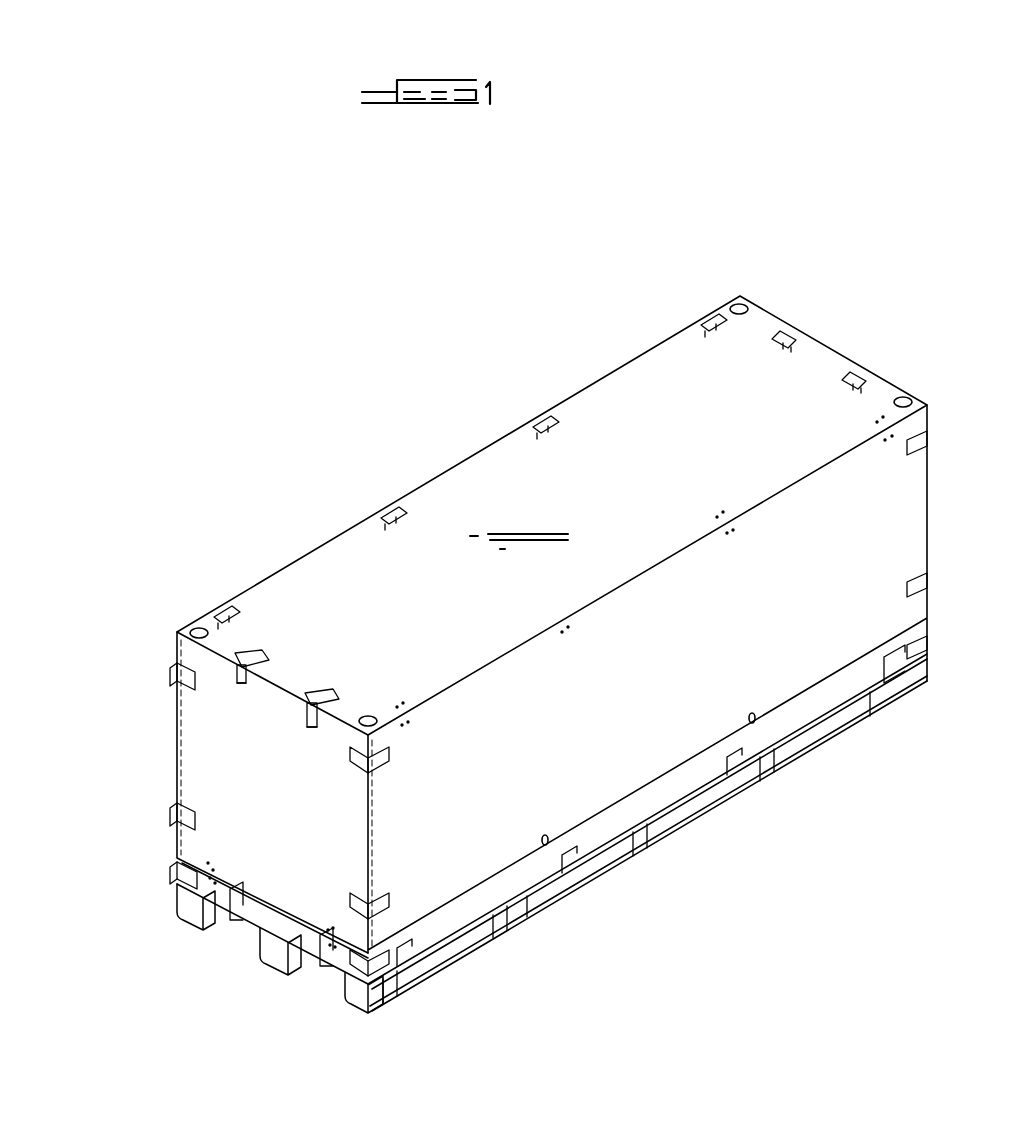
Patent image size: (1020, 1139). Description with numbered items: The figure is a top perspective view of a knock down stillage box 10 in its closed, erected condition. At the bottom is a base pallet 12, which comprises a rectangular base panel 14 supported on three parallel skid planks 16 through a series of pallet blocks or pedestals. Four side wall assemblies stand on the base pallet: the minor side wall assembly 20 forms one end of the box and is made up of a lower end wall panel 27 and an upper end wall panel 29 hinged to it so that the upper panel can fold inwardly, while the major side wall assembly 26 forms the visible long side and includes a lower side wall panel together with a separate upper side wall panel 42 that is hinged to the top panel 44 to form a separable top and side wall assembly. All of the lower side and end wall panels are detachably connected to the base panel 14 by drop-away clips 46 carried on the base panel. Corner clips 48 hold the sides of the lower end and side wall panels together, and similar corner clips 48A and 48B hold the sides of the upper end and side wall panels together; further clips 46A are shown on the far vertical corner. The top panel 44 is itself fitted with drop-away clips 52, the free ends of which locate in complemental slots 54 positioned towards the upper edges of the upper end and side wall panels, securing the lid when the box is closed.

The knock down stillage box 10 is at (384, 446).
The base pallet 12 is at (485, 936).
The rectangular base panel 14 is at (612, 858).
The skid planks 16 is at (568, 894).
The minor side wall assembly 20 is at (177, 872).
The major side wall assembly 26 is at (676, 784).
The lower end wall panel 27 is at (266, 916).
The upper end wall panel 29 is at (290, 831).
The upper side wall panel 42 is at (665, 685).
The top panel 44 is at (645, 483).
The drop-away clips 46 is at (305, 960).
The corner brackets 46A is at (918, 590).
The corner clips 48 is at (172, 866).
The corner clips 48A is at (378, 770).
The corner clips 48B is at (173, 666).
The drop-away clips 52 is at (384, 530).
The complemental slots 54 is at (306, 716).